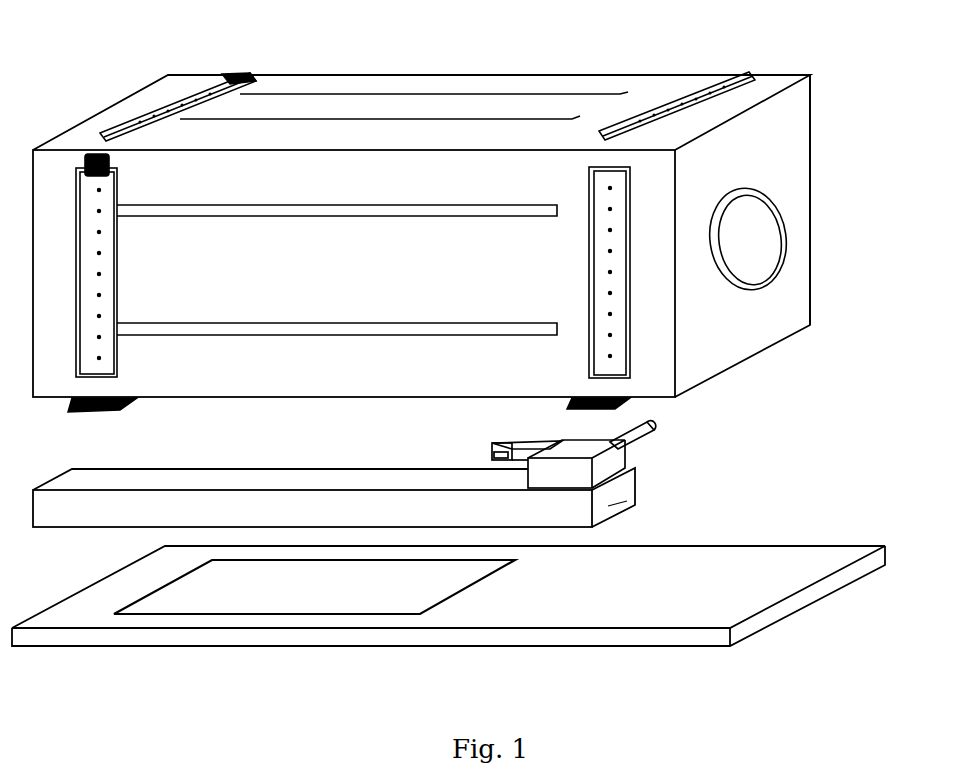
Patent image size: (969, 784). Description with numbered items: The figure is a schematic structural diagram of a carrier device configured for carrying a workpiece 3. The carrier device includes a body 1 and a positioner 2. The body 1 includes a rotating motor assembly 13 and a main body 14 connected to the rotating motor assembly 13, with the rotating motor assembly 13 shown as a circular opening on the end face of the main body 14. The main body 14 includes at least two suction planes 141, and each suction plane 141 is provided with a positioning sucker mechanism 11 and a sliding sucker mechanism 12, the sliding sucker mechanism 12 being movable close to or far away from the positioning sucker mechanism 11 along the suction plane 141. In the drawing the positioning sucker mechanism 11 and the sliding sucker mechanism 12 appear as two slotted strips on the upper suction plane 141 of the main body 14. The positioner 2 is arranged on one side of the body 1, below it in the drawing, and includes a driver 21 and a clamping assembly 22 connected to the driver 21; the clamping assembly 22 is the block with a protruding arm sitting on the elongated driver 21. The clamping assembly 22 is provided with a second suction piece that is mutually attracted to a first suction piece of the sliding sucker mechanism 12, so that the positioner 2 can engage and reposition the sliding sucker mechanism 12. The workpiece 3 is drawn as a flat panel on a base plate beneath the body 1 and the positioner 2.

The body 1 is at (842, 236).
The positioning sucker mechanism 11 is at (738, 77).
The sliding sucker mechanism 12 is at (204, 93).
The rotating motor assembly 13 is at (777, 219).
The main body 14 is at (793, 120).
The suction plane 141 is at (397, 85).
The positioner 2 is at (805, 398).
The driver 21 is at (635, 500).
The clamping assembly 22 is at (652, 432).
The workpiece 3 is at (298, 604).